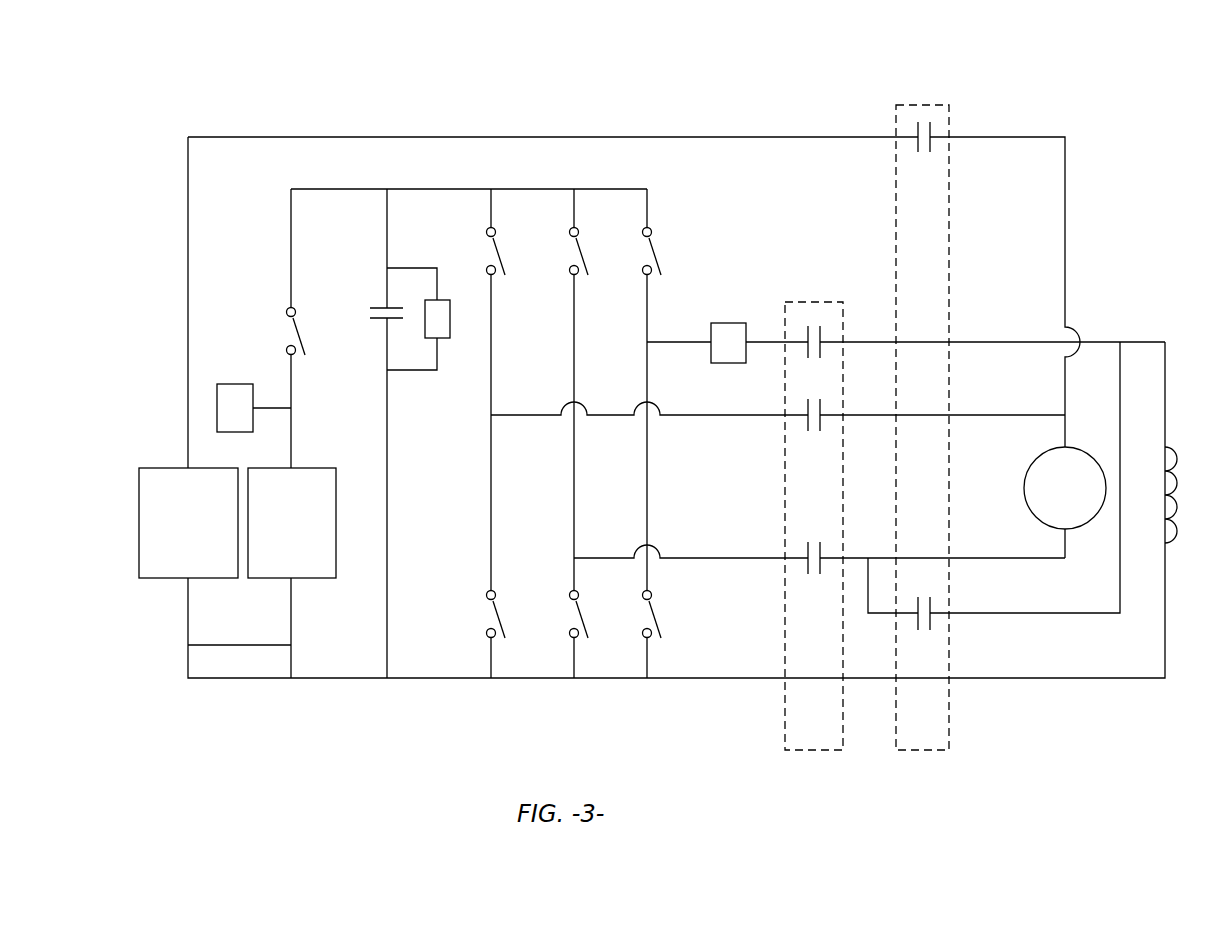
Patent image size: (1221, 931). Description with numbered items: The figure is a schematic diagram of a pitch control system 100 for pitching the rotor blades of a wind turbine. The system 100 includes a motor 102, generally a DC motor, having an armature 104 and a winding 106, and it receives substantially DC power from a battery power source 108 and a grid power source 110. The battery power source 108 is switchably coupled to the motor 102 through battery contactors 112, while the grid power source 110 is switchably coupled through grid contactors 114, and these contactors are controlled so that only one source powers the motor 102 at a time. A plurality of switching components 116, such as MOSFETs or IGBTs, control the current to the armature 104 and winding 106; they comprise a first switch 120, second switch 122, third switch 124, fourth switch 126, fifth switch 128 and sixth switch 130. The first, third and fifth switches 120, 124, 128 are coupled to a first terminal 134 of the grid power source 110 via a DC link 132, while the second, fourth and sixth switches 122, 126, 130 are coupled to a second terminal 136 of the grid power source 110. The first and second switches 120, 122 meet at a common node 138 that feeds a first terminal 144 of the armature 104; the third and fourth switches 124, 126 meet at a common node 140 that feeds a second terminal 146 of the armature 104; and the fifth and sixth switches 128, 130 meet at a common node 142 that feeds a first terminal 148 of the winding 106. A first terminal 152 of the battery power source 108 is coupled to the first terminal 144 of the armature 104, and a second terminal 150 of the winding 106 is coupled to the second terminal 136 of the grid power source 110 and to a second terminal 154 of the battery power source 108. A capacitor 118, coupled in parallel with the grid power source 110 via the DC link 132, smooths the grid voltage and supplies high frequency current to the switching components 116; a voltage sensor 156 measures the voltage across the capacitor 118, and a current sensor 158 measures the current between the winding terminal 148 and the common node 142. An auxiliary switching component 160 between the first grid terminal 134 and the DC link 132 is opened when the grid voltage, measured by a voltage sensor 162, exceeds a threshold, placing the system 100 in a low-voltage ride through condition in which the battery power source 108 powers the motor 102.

The pitch control system 100 is at (158, 178).
The motor 102 is at (1096, 298).
The armature 104 is at (1026, 488).
The winding 106 is at (1172, 498).
The battery power source 108 is at (139, 525).
The grid power source 110 is at (336, 525).
The battery contactors 112 is at (949, 712).
The grid contactors 114 is at (785, 712).
The switching components 116 is at (531, 164).
The capacitor 118 is at (367, 304).
The first switch 120 is at (506, 256).
The second switch 122 is at (506, 620).
The third switch 124 is at (590, 256).
The fourth switch 126 is at (590, 620).
The fifth switch 128 is at (662, 256).
The sixth switch 130 is at (662, 620).
The DC link 132 is at (432, 188).
The first terminal of the grid power source 134 is at (291, 466).
The second terminal of the grid power source 136 is at (291, 580).
The common node of the first and second switches 138 is at (493, 412).
The common node of the third and fourth switches 140 is at (576, 556).
The common node of the fifth and sixth switches 142 is at (650, 340).
The first terminal of the armature 144 is at (1068, 448).
The second terminal of the armature 146 is at (1068, 530).
The first terminal of the winding 148 is at (1168, 450).
The second terminal of the winding 150 is at (1168, 548).
The first terminal of the battery power source 152 is at (188, 466).
The second terminal of the battery power source 154 is at (188, 580).
The voltage sensor 156 is at (450, 325).
The current sensor 158 is at (728, 323).
The auxiliary switching component 160 is at (280, 315).
The voltage sensor 162 is at (228, 384).